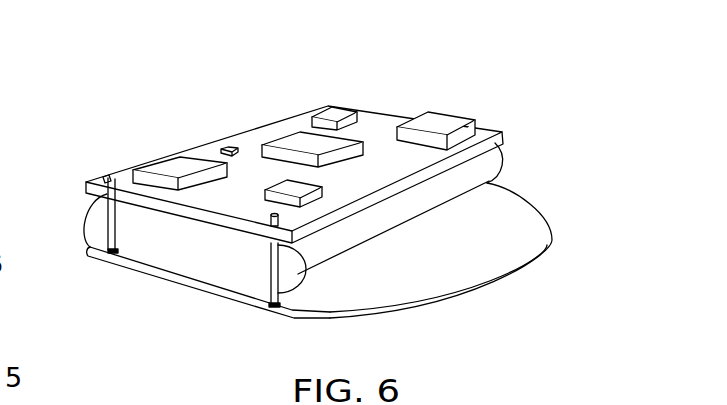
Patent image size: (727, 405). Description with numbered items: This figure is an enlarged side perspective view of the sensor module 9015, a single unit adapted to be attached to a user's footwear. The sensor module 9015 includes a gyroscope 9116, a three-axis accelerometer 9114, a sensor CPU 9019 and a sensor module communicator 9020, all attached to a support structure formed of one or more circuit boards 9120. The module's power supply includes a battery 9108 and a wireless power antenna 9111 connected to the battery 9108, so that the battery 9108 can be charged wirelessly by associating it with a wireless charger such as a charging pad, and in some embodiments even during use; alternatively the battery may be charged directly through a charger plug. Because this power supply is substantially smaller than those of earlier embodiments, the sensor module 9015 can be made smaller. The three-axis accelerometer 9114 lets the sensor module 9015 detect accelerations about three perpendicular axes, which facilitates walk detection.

The sensor module 9015 is at (252, 95).
The sensor CPU 9019 is at (305, 143).
The sensor module communicator 9020 is at (362, 90).
The gyroscope 9116 is at (443, 122).
The three-axis accelerometer 9114 is at (172, 170).
The wireless power antenna 9111 is at (287, 183).
The circuit boards 9120 is at (127, 185).
The battery 9108 is at (273, 307).